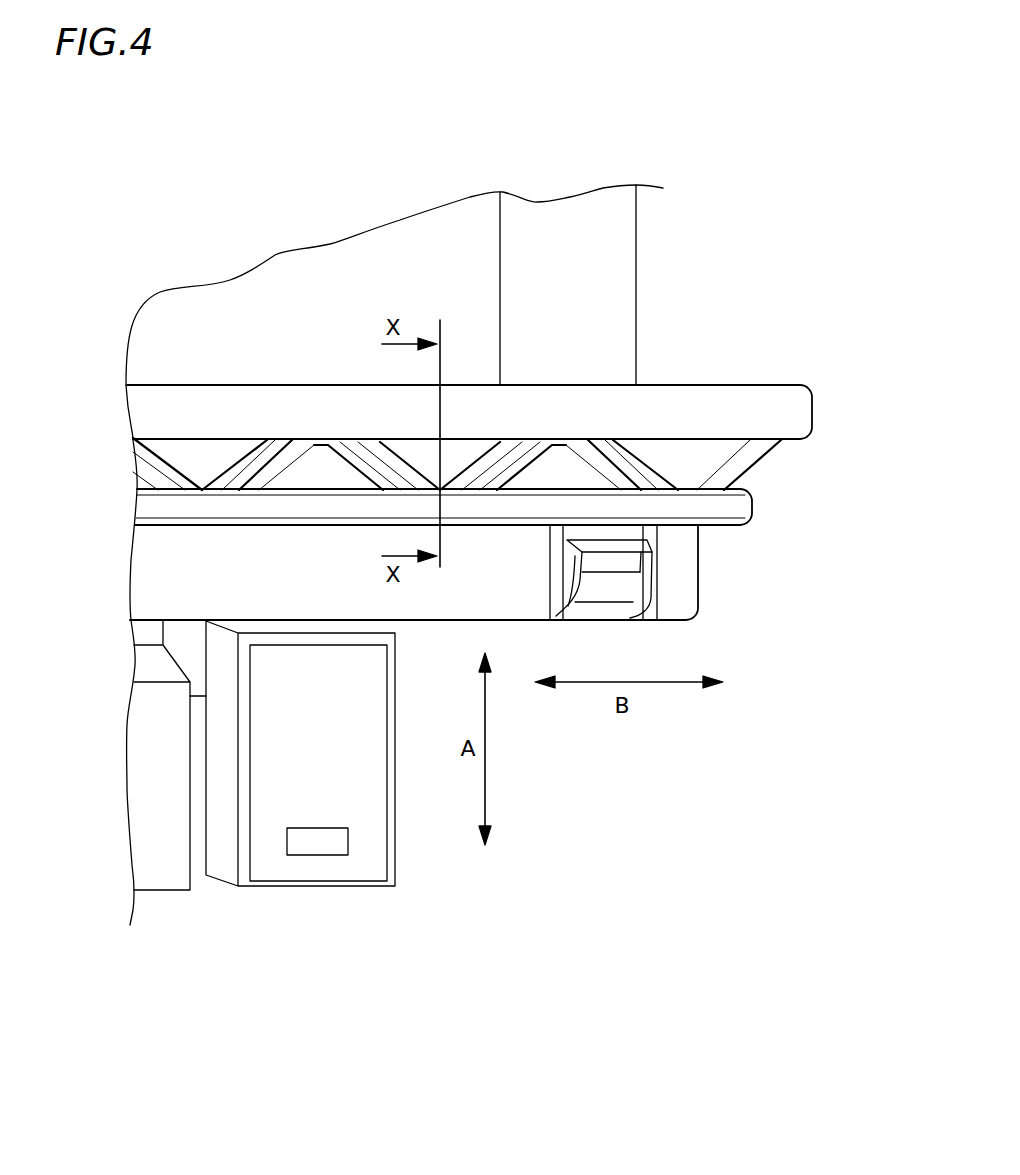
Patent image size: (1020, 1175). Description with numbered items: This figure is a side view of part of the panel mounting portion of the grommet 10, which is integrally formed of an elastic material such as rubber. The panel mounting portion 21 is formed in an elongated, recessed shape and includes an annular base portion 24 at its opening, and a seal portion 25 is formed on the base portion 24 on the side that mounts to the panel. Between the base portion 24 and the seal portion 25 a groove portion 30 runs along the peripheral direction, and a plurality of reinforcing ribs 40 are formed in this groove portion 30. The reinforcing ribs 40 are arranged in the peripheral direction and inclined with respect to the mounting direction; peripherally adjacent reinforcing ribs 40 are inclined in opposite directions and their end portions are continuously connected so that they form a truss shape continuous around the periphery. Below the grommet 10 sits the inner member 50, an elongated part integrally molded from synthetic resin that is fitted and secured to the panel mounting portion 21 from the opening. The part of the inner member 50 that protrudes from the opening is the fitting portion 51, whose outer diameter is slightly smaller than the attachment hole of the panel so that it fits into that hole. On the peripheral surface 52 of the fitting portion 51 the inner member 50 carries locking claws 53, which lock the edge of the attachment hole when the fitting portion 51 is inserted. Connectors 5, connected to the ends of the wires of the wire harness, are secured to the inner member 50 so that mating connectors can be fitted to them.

The grommet 10 is at (596, 124).
The panel mounting portion 21 is at (650, 280).
The base portion 24 is at (782, 400).
The seal portion 25 is at (746, 507).
The groove portion 30 is at (464, 452).
The reinforcing ribs 40 is at (236, 458).
The peripheral surface 52 is at (160, 560).
The locking claws 53 is at (645, 563).
The inner member 50 is at (437, 630).
The fitting portion 51 is at (508, 622).
The connectors 5 is at (295, 890).